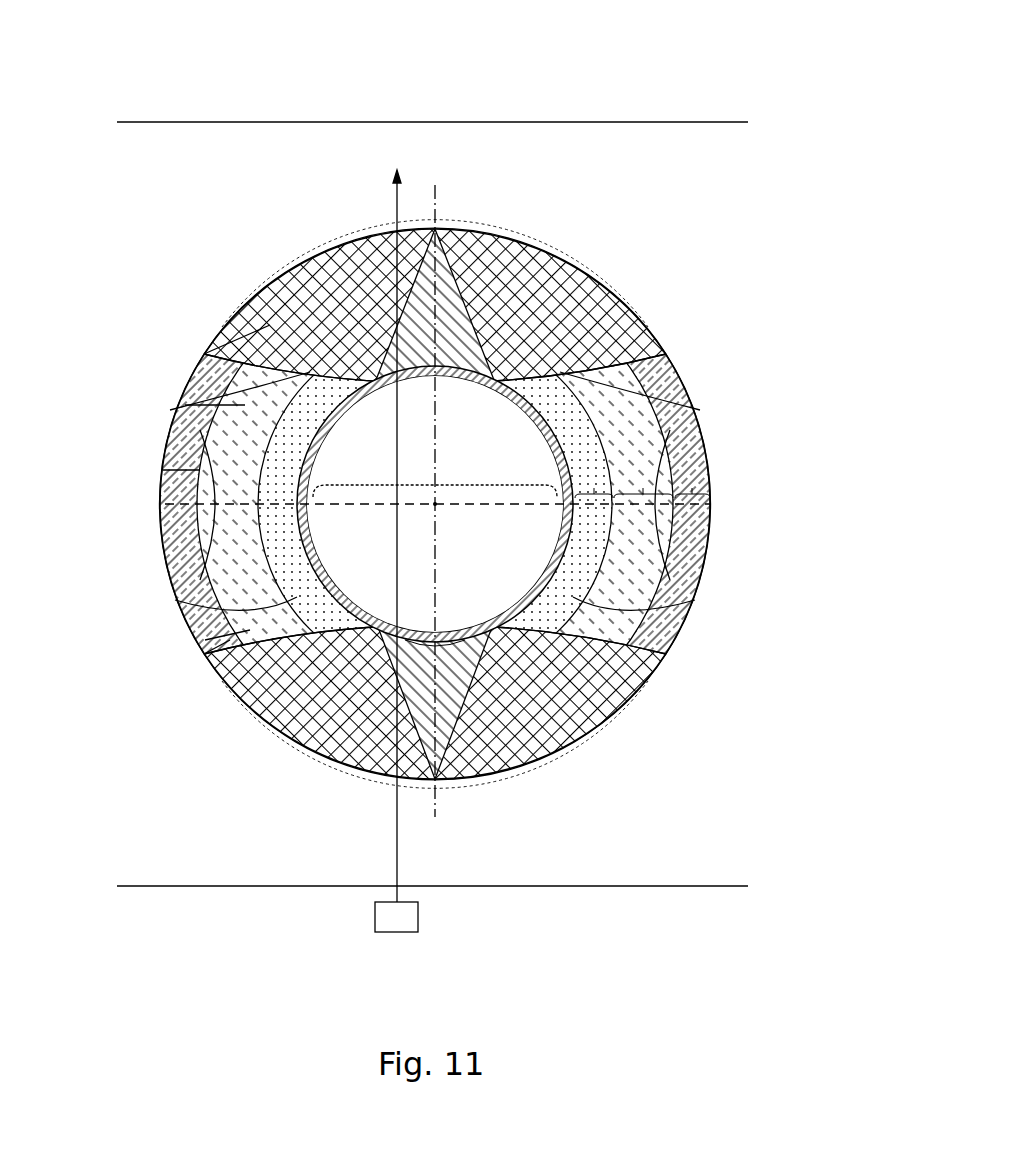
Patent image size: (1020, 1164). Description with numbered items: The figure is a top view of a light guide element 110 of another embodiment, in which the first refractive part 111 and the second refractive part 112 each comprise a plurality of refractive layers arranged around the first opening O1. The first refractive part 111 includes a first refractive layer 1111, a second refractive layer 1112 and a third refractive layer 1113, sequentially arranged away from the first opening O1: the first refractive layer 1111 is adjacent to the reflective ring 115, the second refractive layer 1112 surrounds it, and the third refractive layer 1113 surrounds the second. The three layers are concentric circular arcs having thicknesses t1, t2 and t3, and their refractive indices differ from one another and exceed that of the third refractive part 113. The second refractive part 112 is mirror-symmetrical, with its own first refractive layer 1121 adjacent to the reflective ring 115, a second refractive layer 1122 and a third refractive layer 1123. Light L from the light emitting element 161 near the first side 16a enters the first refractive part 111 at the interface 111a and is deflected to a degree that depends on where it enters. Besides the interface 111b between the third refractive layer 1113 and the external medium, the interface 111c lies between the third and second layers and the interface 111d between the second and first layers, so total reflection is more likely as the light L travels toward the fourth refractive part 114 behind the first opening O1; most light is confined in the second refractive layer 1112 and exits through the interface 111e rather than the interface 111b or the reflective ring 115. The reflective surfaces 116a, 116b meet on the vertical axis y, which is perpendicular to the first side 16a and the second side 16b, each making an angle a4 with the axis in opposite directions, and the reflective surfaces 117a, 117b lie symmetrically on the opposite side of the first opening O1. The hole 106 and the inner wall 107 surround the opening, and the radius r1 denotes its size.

The light guide element 110 is at (95, 32).
The light passing hole 106 is at (427, 632).
The inner wall 107 is at (403, 372).
The first refractive part 111 is at (68, 548).
The first refractive layer 1111 is at (250, 618).
The second refractive layer 1112 is at (245, 596).
The third refractive layer 1113 is at (215, 585).
The interface 111a is at (225, 658).
The interface 111b is at (230, 638).
The interface 111c is at (200, 458).
The interface 111d is at (245, 403).
The interface 111e is at (275, 328).
The second refractive part 112 is at (802, 548).
The first refractive layer 1121 is at (628, 610).
The second refractive layer 1122 is at (650, 582).
The third refractive layer 1123 is at (690, 555).
The third refractive part 113 is at (334, 710).
The fourth refractive part 114 is at (334, 325).
The reflective ring 115 is at (667, 410).
The reflective surface 116a is at (417, 783).
The reflective surface 116b is at (507, 768).
The reflective surface 117a is at (412, 242).
The reflective surface 117b is at (497, 257).
The first side 16a is at (734, 886).
The second side 16b is at (734, 122).
The light emitting element 161 is at (395, 932).
The light L is at (397, 823).
The first opening O1 is at (527, 463).
The radius of hole r1 is at (463, 485).
The thickness t1 is at (594, 481).
The thickness t2 is at (643, 481).
The thickness t3 is at (692, 481).
The angle a4 is at (410, 632).
The vertical axis y is at (437, 803).